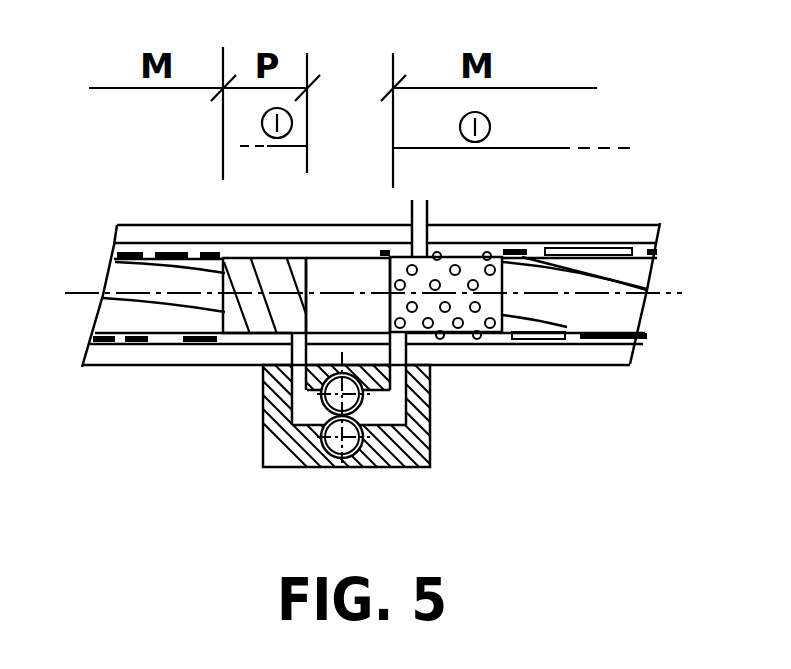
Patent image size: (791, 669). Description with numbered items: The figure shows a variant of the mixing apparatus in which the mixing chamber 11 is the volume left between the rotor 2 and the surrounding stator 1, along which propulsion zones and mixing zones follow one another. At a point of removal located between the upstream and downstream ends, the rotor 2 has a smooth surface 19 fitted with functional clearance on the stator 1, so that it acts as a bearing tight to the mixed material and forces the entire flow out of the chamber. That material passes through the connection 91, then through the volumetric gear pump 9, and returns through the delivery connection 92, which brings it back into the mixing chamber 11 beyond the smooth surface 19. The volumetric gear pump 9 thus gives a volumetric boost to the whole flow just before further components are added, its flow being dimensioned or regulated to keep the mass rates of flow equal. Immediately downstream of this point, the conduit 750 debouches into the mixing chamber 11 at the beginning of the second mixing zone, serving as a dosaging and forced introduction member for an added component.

The stator 1 is at (117, 249).
The rotor 2 is at (118, 310).
The mixing chamber 11 is at (147, 337).
The smooth surface 19 is at (337, 282).
The conduit 750 is at (422, 205).
The volumetric gear pump 9 is at (370, 460).
The connection 91 is at (303, 400).
The delivery connection 92 is at (388, 403).